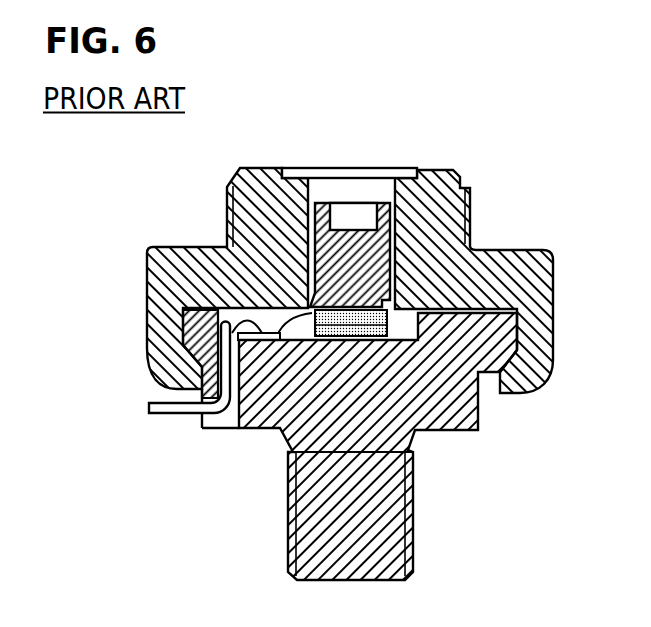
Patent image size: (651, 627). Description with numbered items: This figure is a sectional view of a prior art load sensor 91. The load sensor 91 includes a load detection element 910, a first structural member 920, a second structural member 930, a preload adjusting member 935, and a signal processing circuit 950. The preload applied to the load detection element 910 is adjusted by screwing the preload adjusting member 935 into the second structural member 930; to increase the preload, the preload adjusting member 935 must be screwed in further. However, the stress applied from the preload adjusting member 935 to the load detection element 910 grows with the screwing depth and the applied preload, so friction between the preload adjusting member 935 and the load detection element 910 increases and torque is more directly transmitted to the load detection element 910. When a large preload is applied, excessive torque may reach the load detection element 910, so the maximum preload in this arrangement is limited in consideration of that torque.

The load sensor 91 is at (536, 206).
The load detection element 910 is at (432, 420).
The first structural member 920 is at (261, 424).
The second structural member 930 is at (552, 286).
The preload adjusting member 935 is at (378, 222).
The signal processing circuit 950 is at (262, 332).